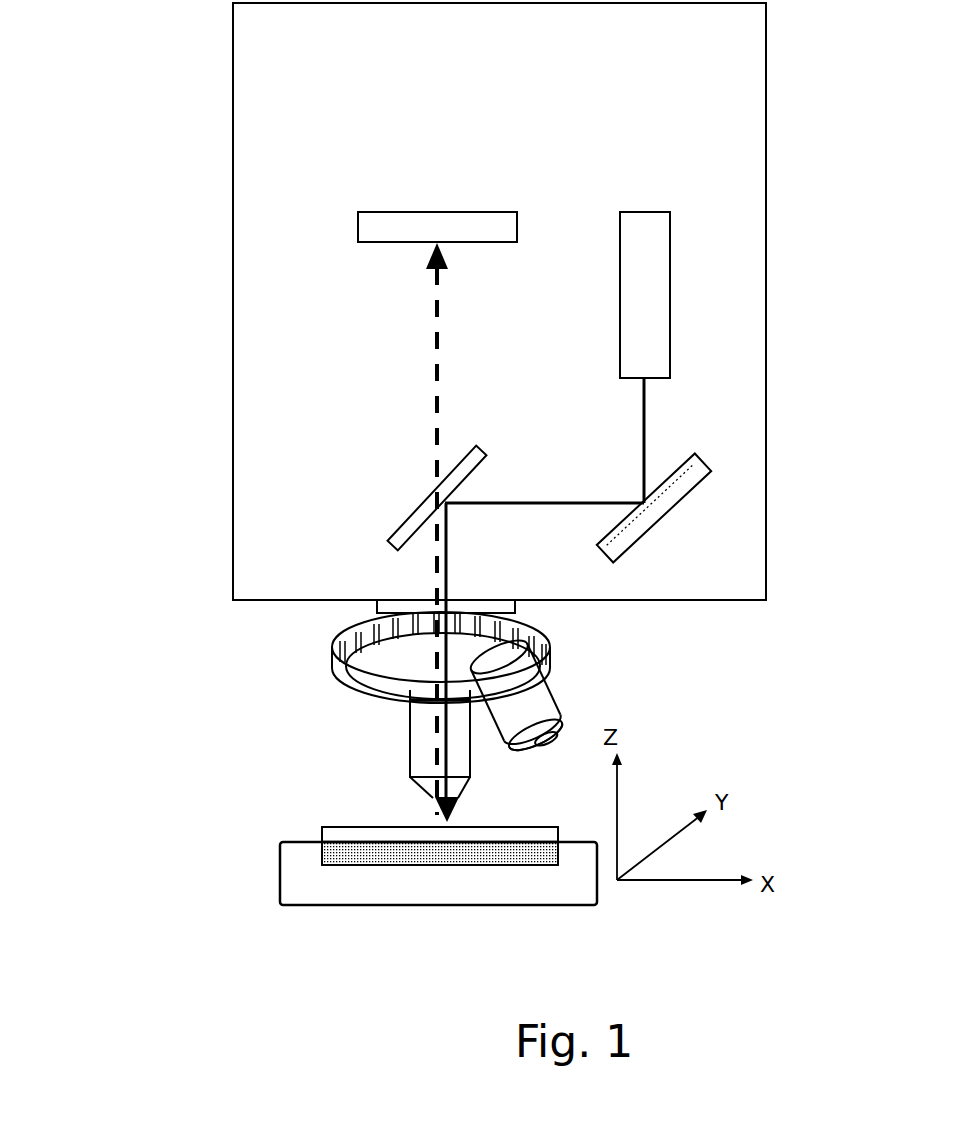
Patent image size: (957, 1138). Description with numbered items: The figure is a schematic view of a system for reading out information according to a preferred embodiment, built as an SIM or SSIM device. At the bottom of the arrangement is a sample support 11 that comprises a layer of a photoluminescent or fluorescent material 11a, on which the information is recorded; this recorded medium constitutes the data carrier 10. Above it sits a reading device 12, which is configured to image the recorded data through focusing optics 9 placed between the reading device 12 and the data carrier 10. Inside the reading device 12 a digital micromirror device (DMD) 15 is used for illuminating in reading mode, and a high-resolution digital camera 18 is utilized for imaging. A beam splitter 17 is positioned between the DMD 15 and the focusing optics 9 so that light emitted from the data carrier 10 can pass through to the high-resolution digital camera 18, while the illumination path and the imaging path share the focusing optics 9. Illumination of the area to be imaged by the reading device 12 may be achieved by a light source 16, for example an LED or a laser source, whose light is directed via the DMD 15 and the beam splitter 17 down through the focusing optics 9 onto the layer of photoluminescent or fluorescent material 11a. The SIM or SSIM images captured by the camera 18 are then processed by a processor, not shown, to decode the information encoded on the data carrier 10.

The focusing optics 9 is at (410, 737).
The data carrier 10 is at (320, 834).
The sample support 11 is at (455, 907).
The layer of photoluminescent or fluorescent material 11a is at (330, 852).
The reading device 12 is at (232, 571).
The digital micromirror device (DMD) 15 is at (638, 538).
The light source 16 is at (643, 255).
The beam splitter 17 is at (413, 510).
The high-resolution digital camera 18 is at (439, 222).